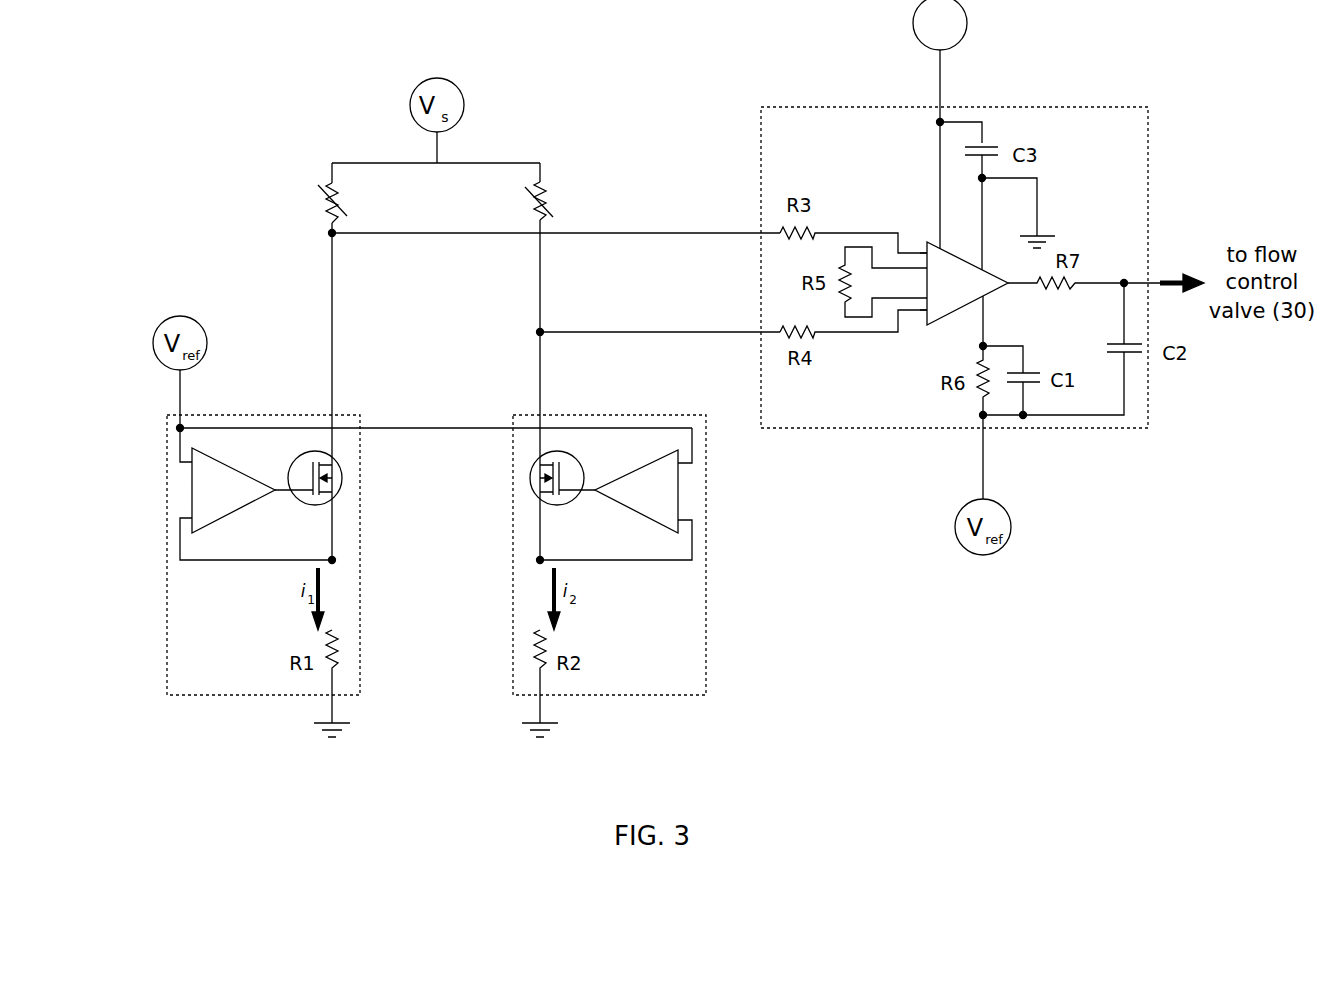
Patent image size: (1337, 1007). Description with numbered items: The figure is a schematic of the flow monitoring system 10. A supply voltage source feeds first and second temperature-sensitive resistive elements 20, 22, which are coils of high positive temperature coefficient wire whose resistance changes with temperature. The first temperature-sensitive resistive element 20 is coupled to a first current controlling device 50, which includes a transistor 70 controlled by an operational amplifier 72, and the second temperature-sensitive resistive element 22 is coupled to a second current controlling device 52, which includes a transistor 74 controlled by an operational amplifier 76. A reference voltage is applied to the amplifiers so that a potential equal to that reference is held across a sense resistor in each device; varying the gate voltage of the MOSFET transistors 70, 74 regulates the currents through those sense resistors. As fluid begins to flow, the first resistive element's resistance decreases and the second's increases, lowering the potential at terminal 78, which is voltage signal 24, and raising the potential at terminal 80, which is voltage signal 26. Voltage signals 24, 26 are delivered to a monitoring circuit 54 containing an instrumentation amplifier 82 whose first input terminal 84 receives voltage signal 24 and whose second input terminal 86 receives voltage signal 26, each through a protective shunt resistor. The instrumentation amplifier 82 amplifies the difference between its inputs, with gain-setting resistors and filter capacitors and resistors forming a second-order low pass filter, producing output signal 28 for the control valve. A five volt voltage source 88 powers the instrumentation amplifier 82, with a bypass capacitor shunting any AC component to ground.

The flow monitoring system 10 is at (116, 103).
The first temperature-sensitive resistive element 20 is at (322, 190).
The second temperature-sensitive resistive element 22 is at (553, 192).
The voltage signal 24 is at (663, 233).
The voltage signal 26 is at (663, 332).
The output signal 28 is at (1167, 280).
The first current controlling device 50 is at (208, 413).
The second current controlling device 52 is at (567, 413).
The monitoring circuit 54 is at (852, 430).
The transistor 70 is at (314, 504).
The operational amplifier 72 is at (200, 530).
The transistor 74 is at (555, 504).
The operational amplifier 76 is at (672, 532).
The terminal 78 is at (330, 232).
The terminal 80 is at (540, 332).
The instrumentation amplifier 82 is at (967, 283).
The first input terminal 84 is at (942, 252).
The second input terminal 86 is at (942, 312).
The voltage source 88 is at (913, 20).